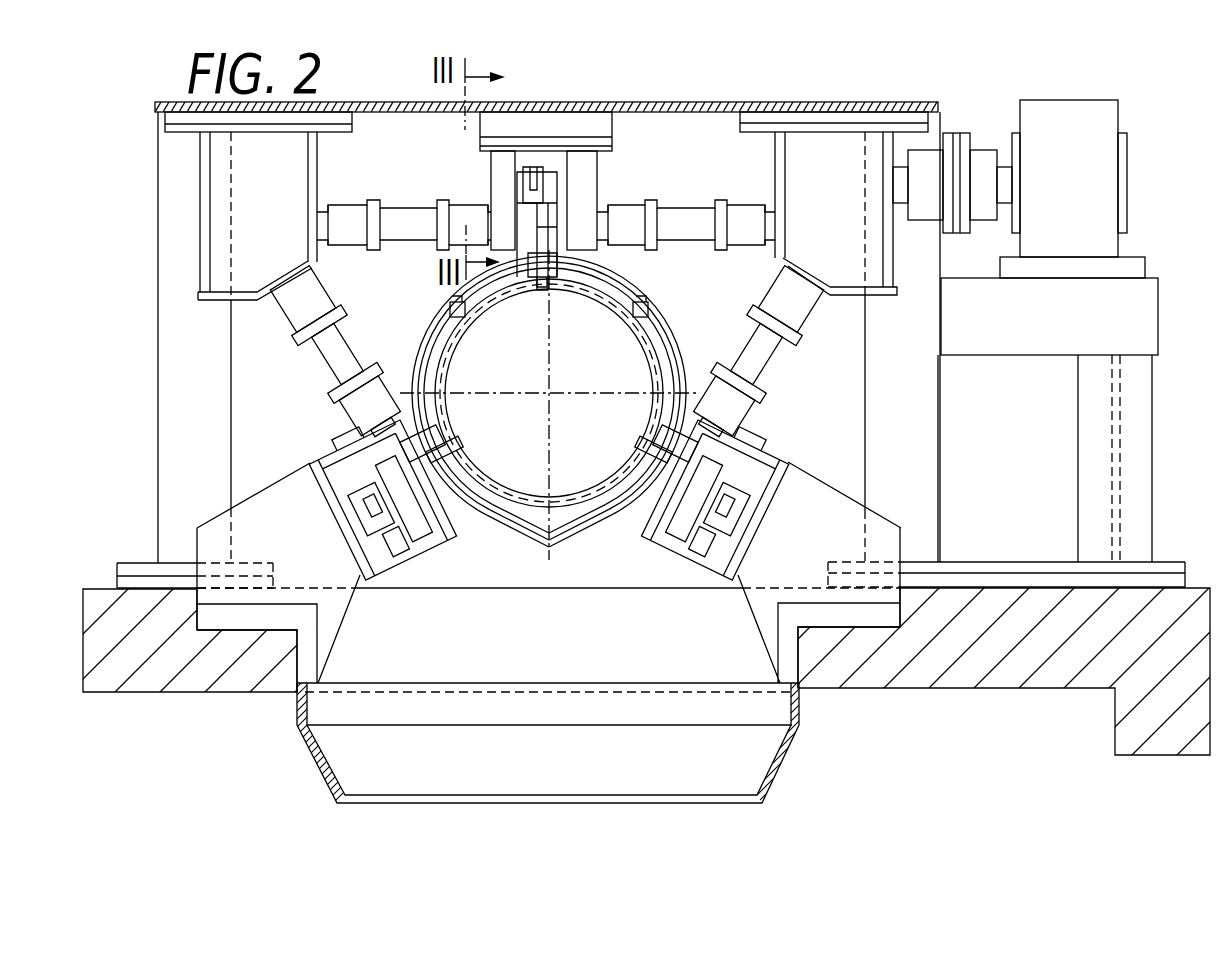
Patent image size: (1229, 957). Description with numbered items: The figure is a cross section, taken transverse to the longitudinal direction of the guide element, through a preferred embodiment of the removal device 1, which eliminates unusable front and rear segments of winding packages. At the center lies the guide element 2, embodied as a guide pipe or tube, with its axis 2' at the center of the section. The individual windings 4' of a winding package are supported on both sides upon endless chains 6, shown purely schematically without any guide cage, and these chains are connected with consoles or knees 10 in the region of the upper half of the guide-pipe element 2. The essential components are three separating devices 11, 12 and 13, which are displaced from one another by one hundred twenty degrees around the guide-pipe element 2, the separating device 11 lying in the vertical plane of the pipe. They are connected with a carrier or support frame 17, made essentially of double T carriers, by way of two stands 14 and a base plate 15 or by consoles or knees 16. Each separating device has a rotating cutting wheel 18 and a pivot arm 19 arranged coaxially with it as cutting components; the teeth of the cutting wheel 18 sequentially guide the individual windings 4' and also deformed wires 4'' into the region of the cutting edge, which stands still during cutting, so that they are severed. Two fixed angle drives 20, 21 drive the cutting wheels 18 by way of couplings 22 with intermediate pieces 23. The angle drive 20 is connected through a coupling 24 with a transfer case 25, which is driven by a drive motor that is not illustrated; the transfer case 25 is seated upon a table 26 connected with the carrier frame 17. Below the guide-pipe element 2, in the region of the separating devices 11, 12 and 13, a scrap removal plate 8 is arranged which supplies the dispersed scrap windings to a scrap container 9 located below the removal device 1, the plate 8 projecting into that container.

The removal device 1 is at (955, 95).
The guide element 2 is at (549, 429).
The pipe axis 2' is at (550, 405).
The individual windings 4' is at (498, 541).
The deformed wires 4'' is at (580, 547).
The endless chains 6 is at (448, 303).
The scrap removal plate 8 is at (766, 750).
The scrap container 9 is at (985, 760).
The consoles 10 is at (456, 320).
The separating device 11 is at (620, 186).
The separating device 12 is at (330, 437).
The separating device 13 is at (780, 433).
The stands 14 is at (497, 186).
The base plate 15 is at (589, 122).
The consoles 16 is at (345, 577).
The carrier frame 17 is at (935, 123).
The cutting wheel 18 is at (560, 222).
The pivot arm 19 is at (538, 218).
The angle drive 20 is at (800, 172).
The angle drive 21 is at (296, 166).
The couplings 22 is at (726, 400).
The intermediate pieces 23 is at (770, 350).
The coupling 24 is at (960, 222).
The transfer case 25 is at (1110, 116).
The table 26 is at (1036, 345).